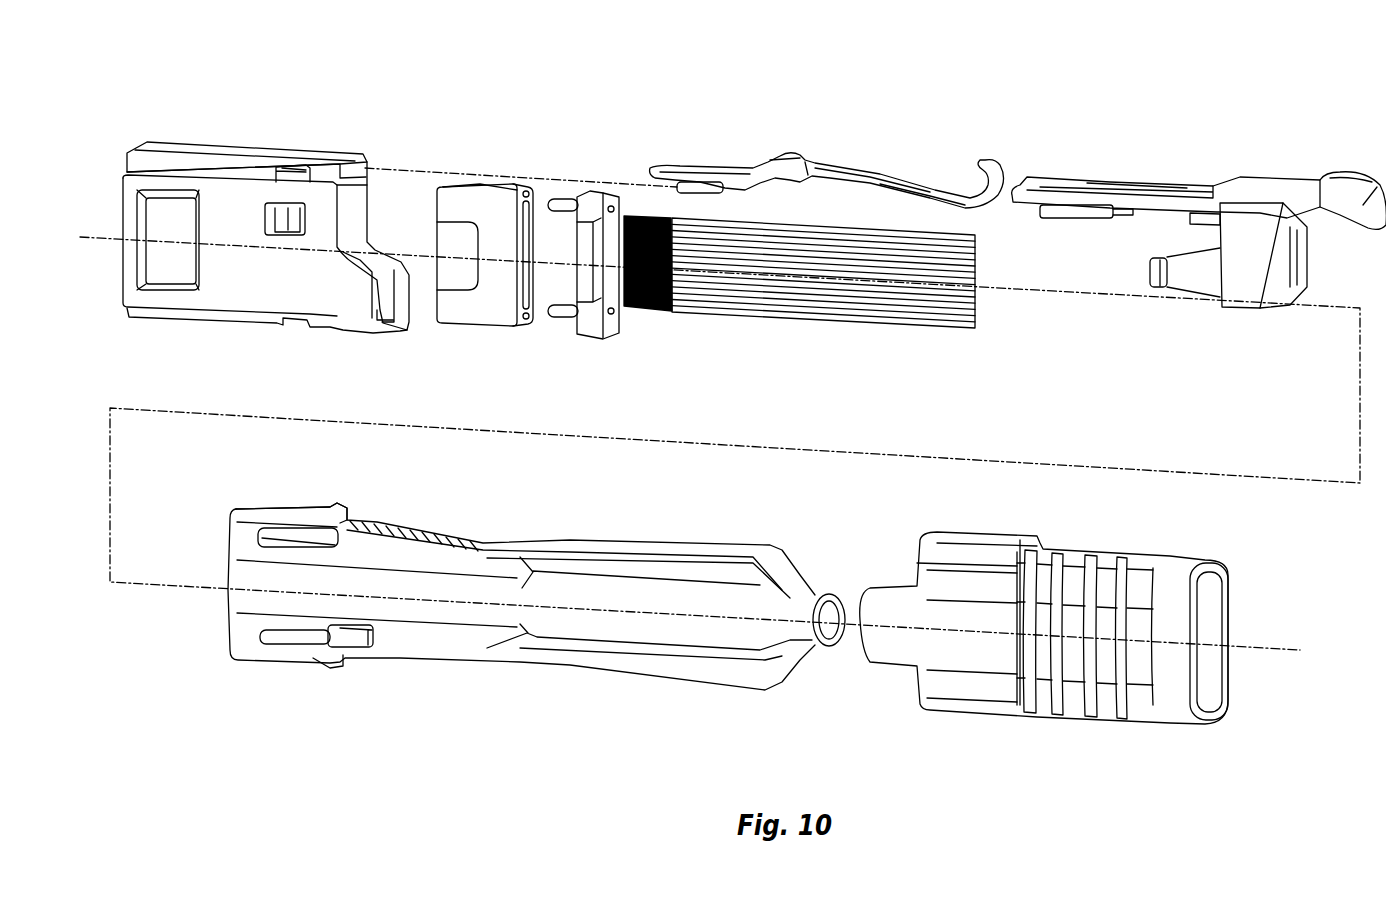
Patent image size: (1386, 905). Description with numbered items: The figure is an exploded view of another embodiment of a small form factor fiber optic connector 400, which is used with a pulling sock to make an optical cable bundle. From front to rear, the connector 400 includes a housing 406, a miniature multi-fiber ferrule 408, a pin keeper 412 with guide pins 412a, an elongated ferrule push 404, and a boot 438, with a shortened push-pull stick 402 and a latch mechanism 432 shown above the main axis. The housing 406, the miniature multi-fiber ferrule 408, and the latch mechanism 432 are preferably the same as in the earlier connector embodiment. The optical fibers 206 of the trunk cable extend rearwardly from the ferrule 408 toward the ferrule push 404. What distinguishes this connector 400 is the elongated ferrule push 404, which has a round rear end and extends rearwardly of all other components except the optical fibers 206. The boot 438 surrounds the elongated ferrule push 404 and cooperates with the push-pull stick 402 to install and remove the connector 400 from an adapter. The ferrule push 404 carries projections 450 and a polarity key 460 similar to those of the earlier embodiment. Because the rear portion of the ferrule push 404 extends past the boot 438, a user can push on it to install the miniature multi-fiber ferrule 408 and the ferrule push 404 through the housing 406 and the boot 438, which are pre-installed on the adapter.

The small form factor fiber optic connector 400 is at (780, 140).
The push-pull stick 402 is at (1205, 170).
The ferrule push 404 is at (664, 660).
The housing 406 is at (262, 138).
The miniature multi-fiber ferrule 408 is at (487, 165).
The pin keeper 412 is at (602, 195).
The guide pins 412a is at (560, 198).
The latch mechanism 432 is at (886, 172).
The boot 438 is at (1058, 738).
The projections 450 is at (278, 515).
The polarity key 460 is at (352, 650).
The optical fibers 206 is at (860, 322).